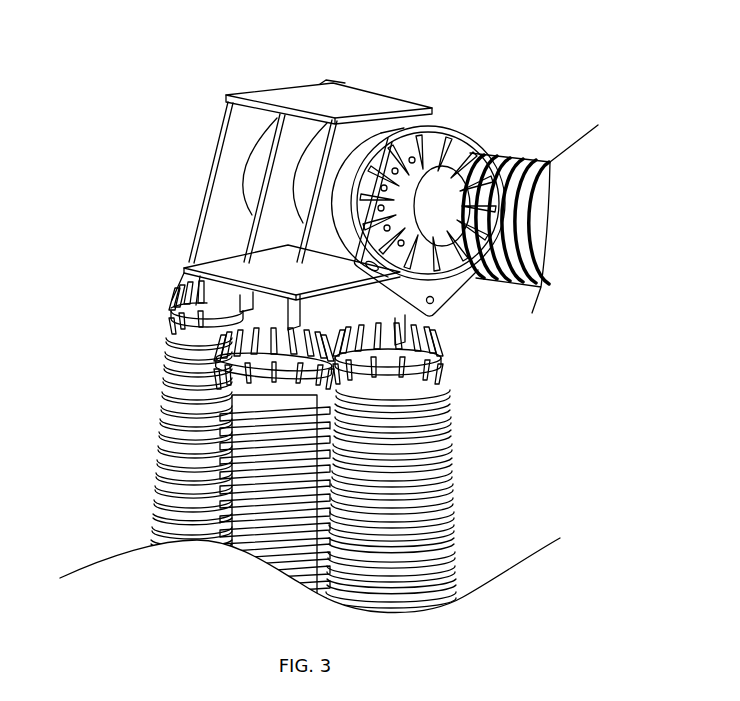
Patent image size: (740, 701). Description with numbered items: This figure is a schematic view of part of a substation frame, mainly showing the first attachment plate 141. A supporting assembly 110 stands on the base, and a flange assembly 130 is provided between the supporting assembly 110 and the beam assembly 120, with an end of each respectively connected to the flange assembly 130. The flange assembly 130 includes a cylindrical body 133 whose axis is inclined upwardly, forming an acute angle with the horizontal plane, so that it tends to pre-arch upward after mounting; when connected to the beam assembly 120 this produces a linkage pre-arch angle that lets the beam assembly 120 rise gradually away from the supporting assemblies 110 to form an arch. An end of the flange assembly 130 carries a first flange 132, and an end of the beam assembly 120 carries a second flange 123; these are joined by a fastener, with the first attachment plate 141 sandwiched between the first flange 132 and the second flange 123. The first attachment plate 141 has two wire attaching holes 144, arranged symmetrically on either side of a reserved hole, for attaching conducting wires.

The supporting assembly 110 is at (147, 427).
The beam assembly 120 is at (543, 145).
The second flange 123 is at (452, 167).
The flange assembly 130 is at (232, 160).
The first flange 132 is at (398, 140).
The cylindrical body 133 is at (307, 173).
The first attachment plate 141 is at (445, 287).
The wire attaching holes 144 is at (365, 265).